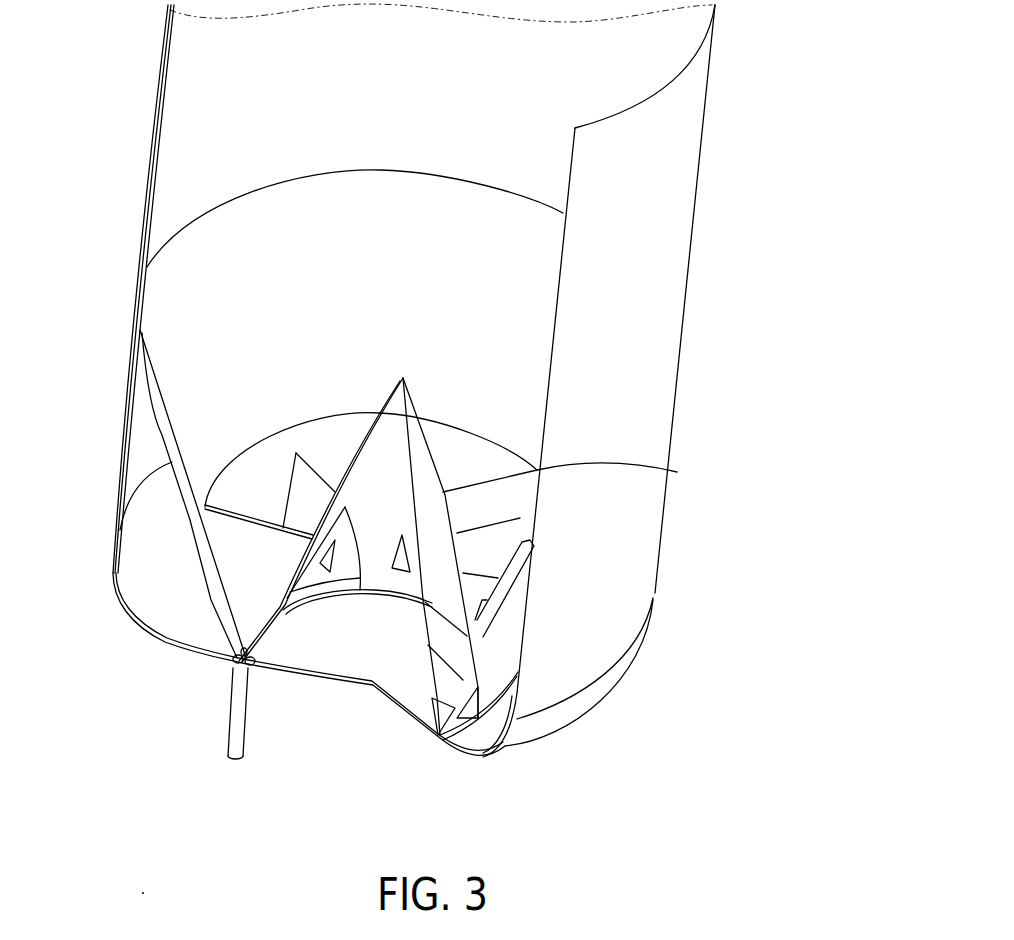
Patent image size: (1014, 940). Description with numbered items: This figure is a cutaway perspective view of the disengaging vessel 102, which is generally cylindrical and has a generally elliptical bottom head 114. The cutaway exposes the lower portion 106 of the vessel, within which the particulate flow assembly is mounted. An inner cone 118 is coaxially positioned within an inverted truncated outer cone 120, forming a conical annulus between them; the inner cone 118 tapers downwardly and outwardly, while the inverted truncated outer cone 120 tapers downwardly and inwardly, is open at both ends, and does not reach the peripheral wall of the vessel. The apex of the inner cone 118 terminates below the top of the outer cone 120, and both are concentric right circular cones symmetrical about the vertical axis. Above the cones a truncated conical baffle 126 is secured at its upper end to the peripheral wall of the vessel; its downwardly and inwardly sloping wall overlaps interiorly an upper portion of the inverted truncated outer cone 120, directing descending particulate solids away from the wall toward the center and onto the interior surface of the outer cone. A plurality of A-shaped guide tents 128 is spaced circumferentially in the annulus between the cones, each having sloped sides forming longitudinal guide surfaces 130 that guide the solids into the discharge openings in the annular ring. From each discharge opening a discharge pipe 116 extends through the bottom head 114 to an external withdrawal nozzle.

The disengaging vessel 102 is at (140, 233).
The lower portion 106 is at (714, 340).
The bottom head 114 is at (150, 637).
The discharge pipe 116 is at (249, 722).
The inner cone 118 is at (677, 472).
The inverted truncated outer cone 120 is at (160, 446).
The truncated conical baffle 126 is at (248, 192).
The guide tents 128 is at (323, 480).
The longitudinal guide surfaces 130 is at (268, 577).